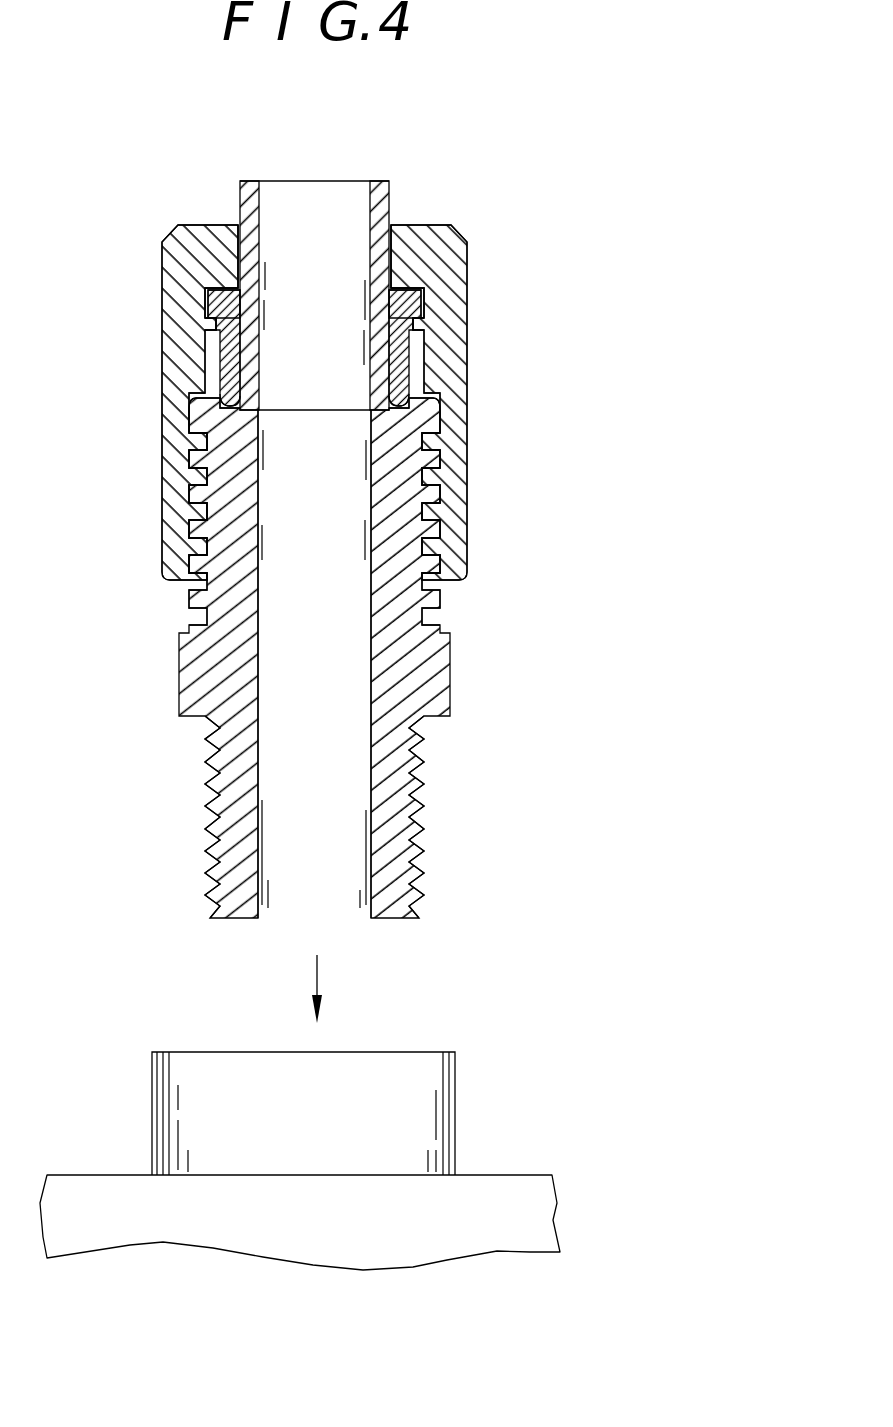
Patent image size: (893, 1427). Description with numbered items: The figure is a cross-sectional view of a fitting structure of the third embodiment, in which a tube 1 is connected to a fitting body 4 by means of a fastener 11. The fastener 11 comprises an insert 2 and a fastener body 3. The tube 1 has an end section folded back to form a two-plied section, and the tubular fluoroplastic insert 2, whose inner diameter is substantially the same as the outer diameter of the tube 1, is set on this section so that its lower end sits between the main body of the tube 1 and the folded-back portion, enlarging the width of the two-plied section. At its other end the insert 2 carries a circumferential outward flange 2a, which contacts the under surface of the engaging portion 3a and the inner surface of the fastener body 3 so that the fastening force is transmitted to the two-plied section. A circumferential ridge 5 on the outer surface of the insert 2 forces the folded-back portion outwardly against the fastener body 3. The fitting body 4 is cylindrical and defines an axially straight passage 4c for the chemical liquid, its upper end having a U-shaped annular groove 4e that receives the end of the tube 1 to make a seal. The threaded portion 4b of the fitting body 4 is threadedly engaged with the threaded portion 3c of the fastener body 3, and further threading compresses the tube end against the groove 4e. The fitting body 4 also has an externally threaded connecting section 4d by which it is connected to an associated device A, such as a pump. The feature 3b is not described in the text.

The tube 1 is at (390, 190).
The insert 2 is at (407, 327).
The flange 2a is at (412, 303).
The fastener body 3 is at (198, 203).
The engaging portion 3a is at (400, 267).
The engaging projection of nut 3b is at (203, 323).
The threaded portion 3c is at (442, 468).
The fitting body 4 is at (140, 720).
The threaded portion 4b is at (187, 590).
The passage 4c is at (338, 862).
The connecting section 4d is at (210, 858).
The annular groove 4e is at (217, 442).
The ridge 5 is at (210, 372).
The fastener 11 is at (533, 317).
The associated device A is at (457, 1115).